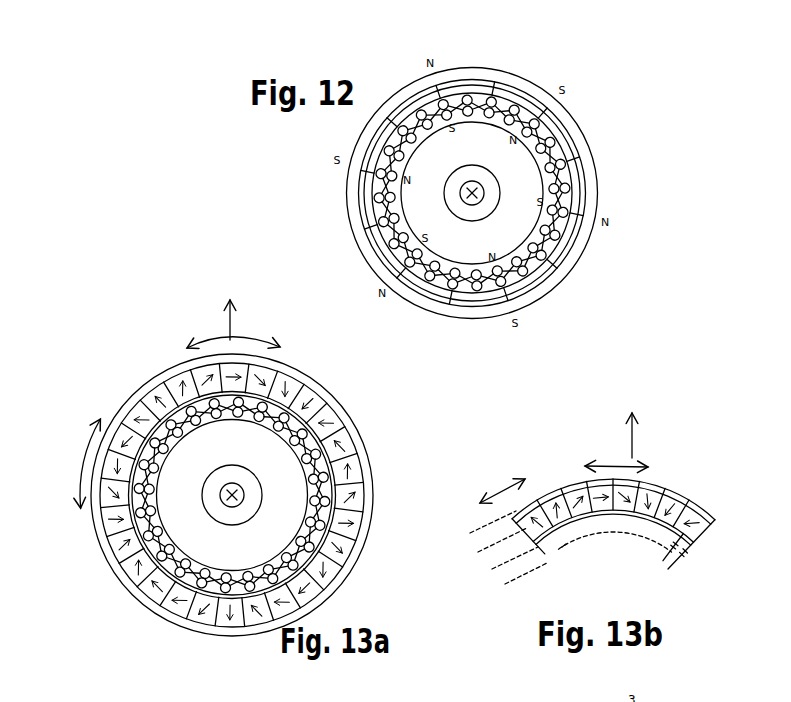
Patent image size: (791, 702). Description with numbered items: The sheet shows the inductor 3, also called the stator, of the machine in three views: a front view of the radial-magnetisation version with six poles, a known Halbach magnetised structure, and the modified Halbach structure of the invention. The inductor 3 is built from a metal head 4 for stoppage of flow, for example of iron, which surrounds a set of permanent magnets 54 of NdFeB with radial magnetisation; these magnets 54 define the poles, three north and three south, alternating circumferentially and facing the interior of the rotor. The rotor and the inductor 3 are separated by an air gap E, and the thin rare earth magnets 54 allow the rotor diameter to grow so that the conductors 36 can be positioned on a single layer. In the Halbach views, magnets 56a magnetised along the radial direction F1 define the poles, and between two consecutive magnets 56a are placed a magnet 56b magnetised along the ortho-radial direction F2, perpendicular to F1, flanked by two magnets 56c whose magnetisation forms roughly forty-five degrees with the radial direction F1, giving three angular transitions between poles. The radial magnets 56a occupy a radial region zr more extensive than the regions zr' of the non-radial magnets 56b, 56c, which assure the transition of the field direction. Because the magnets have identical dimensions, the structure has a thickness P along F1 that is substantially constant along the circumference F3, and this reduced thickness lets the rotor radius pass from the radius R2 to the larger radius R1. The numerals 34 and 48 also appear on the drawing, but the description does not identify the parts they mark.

In FIG. 12, the inductor 3 is at (394, 71).
In FIG. 12, the metal head for stoppage of flow 4 is at (585, 134).
In FIG. 13A, the metal head for stoppage of flow 4 is at (125, 406).
In FIG. 13B, the metal head for stoppage of flow 4 is at (698, 502).
In FIG. 12, the stator coils 34 is at (410, 214).
In FIG. 13A, the stator coils 34 is at (181, 538).
In FIG. 12, the conductors 36 is at (578, 160).
In FIG. 13A, the conductors 36 is at (357, 495).
In FIG. 12, the shaft axis 48 is at (476, 172).
In FIG. 12, the permanent magnets 54 is at (564, 117).
In FIG. 13A, the radially magnetised magnets 56a is at (278, 368).
In FIG. 13B, the radially magnetised magnets 56a is at (537, 487).
In FIG. 13A, the ortho-radially magnetised magnet 56b is at (200, 375).
In FIG. 13B, the ortho-radially magnetised magnet 56b is at (593, 490).
In FIG. 13A, the obliquely magnetised magnets 56c is at (285, 372).
In FIG. 13B, the obliquely magnetised magnets 56c is at (567, 483).
In FIG. 13A, the air gap E is at (338, 447).
In FIG. 13A, the radial direction F1 is at (228, 322).
In FIG. 13B, the radial direction F1 is at (637, 440).
In FIG. 13A, the ortho-radial direction F2 is at (257, 338).
In FIG. 13B, the ortho-radial direction F2 is at (613, 460).
In FIG. 13A, the circumference F3 is at (82, 477).
In FIG. 13B, the circumference F3 is at (485, 495).
In FIG. 13B, the thickness of the magnetised structure P is at (703, 556).
In FIG. 13B, the larger rotor radius R1 is at (693, 573).
In FIG. 13B, the smaller rotor radius R2 is at (670, 565).
In FIG. 13B, the radial region of radial magnets zr is at (600, 574).
In FIG. 13B, the radial regions of non-radial magnets zr' is at (598, 580).